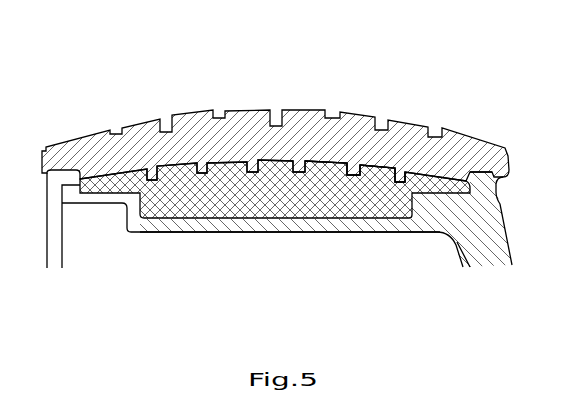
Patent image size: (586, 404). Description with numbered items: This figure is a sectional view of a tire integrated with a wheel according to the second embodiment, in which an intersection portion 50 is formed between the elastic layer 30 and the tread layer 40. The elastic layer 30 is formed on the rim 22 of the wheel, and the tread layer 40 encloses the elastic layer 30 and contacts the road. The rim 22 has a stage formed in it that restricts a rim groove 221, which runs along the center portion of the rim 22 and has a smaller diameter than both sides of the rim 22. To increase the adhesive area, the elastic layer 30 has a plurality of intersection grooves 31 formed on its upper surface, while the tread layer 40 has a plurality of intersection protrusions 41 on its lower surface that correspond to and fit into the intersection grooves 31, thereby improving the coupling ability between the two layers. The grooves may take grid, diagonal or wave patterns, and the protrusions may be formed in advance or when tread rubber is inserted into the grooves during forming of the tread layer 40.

The intersection portion 50 is at (277, 172).
The tread layer 40 is at (275, 95).
The intersection protrusions 41 is at (373, 170).
The elastic layer 30 is at (265, 135).
The intersection grooves 31 is at (355, 188).
The rim 22 is at (279, 254).
The rim groove 221 is at (298, 233).